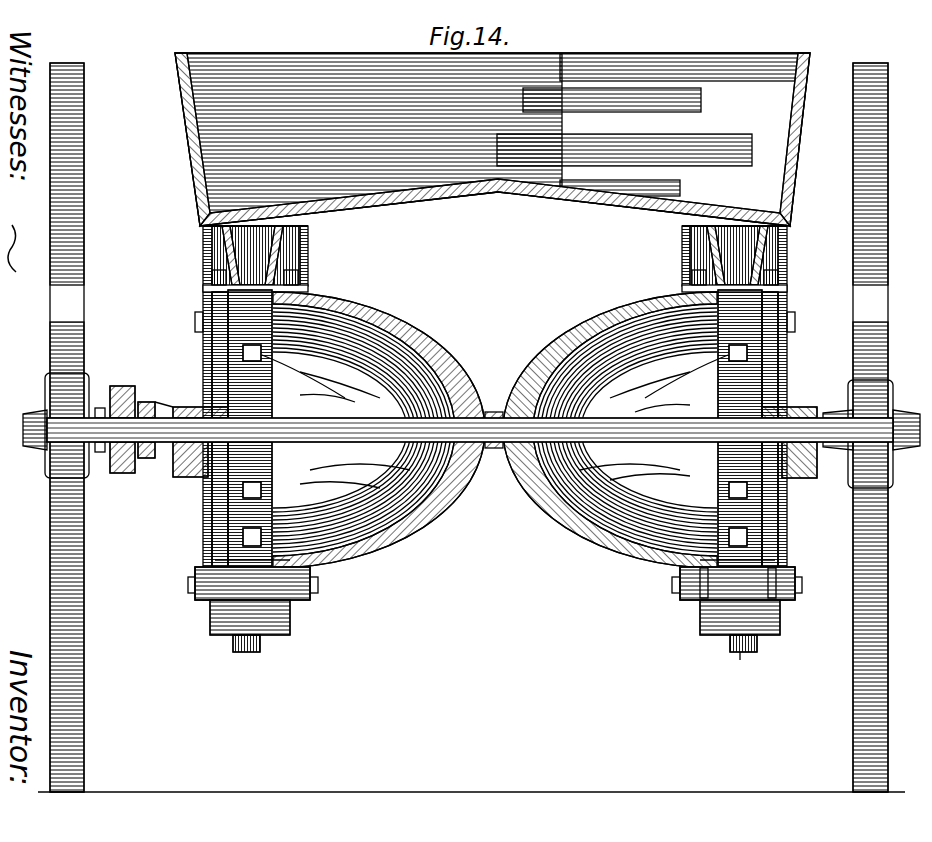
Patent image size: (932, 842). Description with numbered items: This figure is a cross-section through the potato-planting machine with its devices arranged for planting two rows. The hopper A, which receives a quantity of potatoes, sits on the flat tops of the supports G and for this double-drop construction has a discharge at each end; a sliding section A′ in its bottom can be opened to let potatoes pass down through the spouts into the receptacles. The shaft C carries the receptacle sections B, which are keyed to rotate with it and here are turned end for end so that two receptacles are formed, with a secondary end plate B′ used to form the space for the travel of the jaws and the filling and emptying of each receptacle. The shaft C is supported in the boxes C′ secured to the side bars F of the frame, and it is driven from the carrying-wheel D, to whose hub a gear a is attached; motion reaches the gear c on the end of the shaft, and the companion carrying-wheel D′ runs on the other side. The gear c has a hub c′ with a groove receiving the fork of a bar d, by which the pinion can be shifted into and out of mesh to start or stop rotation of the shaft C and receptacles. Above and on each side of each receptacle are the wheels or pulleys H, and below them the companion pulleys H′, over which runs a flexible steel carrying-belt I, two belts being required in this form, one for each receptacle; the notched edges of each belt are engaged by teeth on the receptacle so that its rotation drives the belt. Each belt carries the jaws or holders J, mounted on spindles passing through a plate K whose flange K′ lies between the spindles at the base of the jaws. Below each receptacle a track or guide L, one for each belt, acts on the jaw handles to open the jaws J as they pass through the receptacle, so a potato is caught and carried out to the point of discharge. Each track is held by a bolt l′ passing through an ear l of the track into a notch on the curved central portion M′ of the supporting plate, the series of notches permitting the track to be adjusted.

The hopper A is at (462, 100).
The sliding section A′ is at (495, 235).
The receptacle B is at (336, 306).
The secondary end plate B′ is at (212, 350).
The shaft C is at (495, 421).
The boxes C′ is at (182, 404).
The gear c is at (115, 419).
The hub c′ is at (165, 398).
The gear a is at (149, 397).
The bar d is at (146, 458).
The carrying-wheel D is at (56, 427).
The carrying-wheel D′ is at (871, 427).
The side bars F is at (185, 478).
The supports G is at (495, 413).
The wheels or pulleys H is at (204, 288).
The companion wheels or pulleys H′ is at (210, 620).
The carrying-belt I is at (495, 428).
The jaws or holders J is at (195, 322).
The plate K is at (735, 676).
The flange or projection K′ is at (495, 419).
The track or guide L is at (700, 600).
The ear l is at (800, 560).
The bolt l′ is at (735, 577).
The curved central portion M′ is at (700, 640).